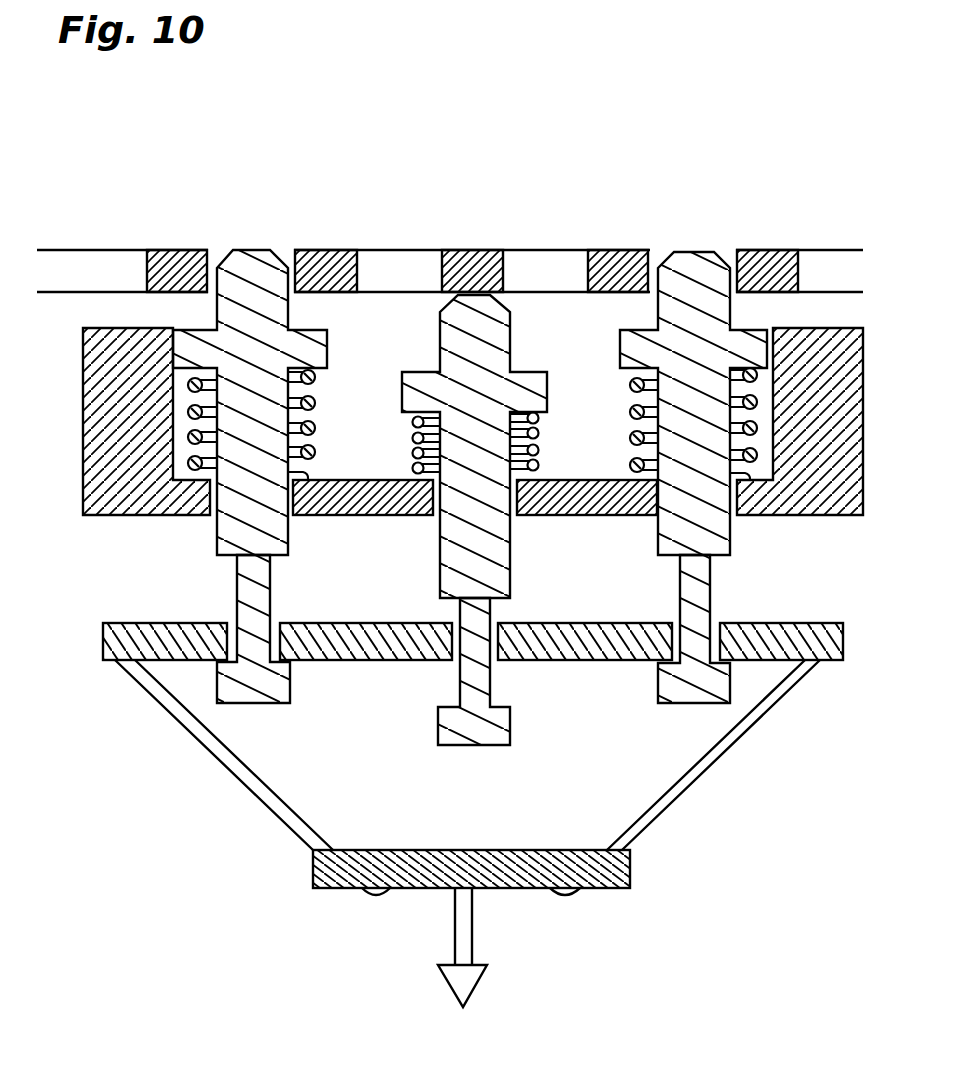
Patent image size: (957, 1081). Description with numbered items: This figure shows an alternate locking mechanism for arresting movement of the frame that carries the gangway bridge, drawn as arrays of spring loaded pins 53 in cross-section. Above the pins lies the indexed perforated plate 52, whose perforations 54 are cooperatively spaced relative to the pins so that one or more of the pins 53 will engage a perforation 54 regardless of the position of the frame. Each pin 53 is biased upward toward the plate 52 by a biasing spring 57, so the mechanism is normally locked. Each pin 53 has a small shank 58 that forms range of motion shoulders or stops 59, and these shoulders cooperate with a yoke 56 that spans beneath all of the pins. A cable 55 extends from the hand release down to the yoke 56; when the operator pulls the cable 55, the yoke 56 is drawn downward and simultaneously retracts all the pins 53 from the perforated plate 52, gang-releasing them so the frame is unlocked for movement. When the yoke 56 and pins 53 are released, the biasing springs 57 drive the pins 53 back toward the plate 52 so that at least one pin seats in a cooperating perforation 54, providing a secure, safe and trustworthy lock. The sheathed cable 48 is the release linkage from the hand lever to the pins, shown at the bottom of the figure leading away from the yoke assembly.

The sheathed cable 48 is at (462, 943).
The perforated plate 52 is at (183, 250).
The pin 53 is at (268, 351).
The perforation 54 is at (547, 270).
The cable 55 is at (650, 803).
The yoke 56 is at (823, 663).
The biasing spring 57 is at (412, 445).
The shank 58 is at (262, 585).
The shoulders or stops 59 is at (493, 707).